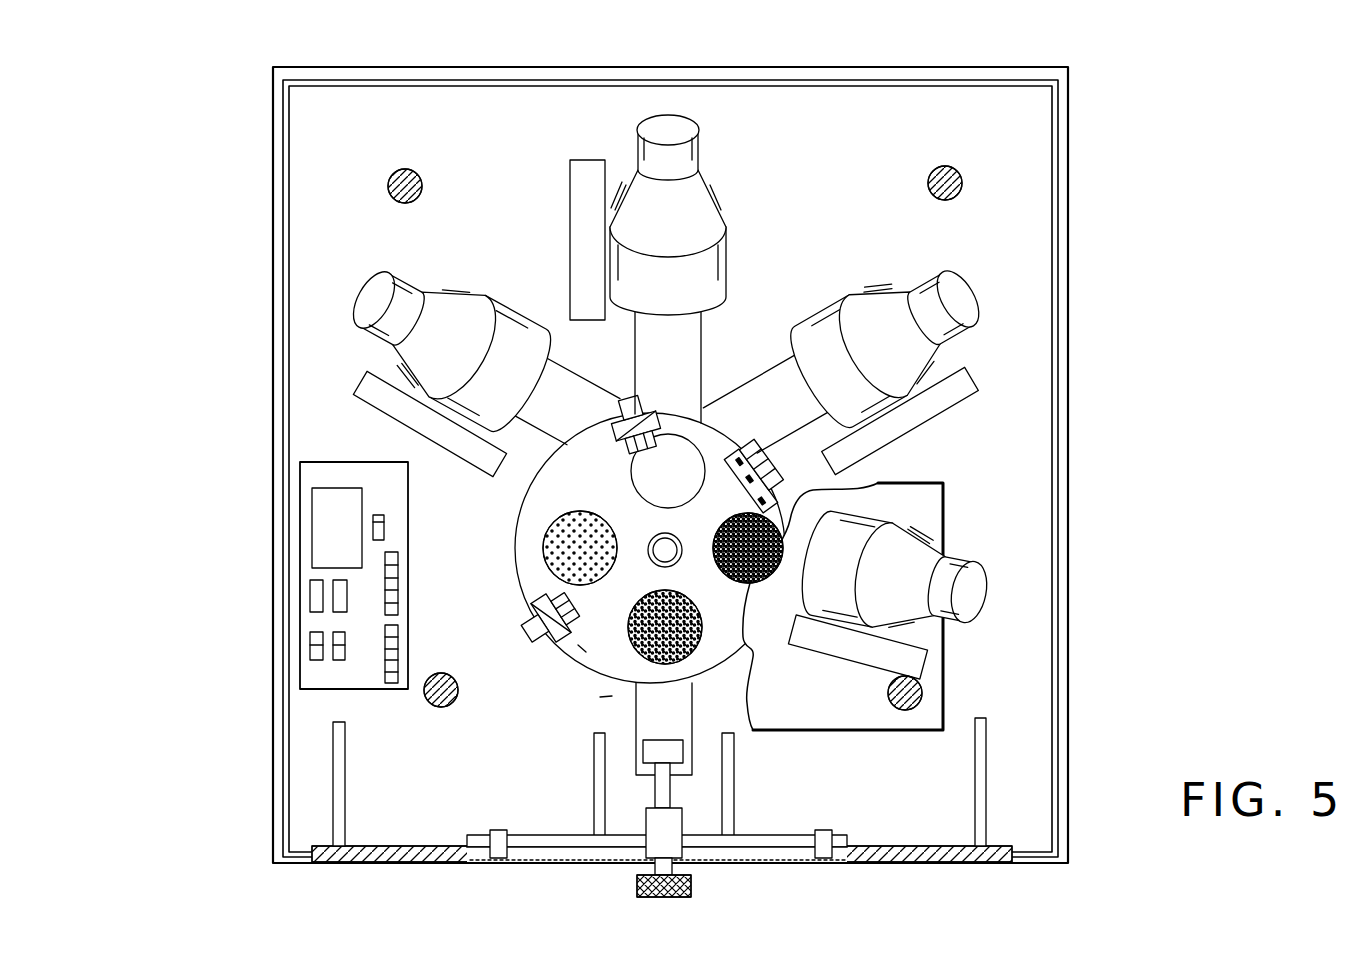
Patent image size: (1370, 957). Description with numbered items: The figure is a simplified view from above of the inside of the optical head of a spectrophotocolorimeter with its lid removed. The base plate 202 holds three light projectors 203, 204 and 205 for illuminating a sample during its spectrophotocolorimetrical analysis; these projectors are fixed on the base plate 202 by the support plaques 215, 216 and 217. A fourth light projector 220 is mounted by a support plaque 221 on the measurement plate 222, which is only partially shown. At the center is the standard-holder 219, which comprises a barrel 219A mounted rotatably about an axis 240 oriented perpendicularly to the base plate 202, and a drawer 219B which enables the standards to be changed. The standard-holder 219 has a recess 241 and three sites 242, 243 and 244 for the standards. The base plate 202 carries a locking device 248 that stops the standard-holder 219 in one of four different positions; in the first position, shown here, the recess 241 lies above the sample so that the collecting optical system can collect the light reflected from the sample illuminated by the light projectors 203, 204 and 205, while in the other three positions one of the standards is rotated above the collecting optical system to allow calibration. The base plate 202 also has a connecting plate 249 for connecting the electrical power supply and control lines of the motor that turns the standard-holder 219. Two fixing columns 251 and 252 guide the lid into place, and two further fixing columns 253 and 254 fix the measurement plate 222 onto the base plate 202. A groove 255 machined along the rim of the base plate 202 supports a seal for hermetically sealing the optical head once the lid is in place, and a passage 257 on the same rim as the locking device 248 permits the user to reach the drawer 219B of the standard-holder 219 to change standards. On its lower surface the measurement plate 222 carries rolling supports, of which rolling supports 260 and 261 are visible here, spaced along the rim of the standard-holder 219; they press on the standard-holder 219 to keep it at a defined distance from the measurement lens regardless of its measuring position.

The base plate 202 is at (1035, 200).
The light projector 203 is at (378, 293).
The light projector 204 is at (668, 128).
The light projector 205 is at (960, 305).
The support plaque 215 is at (372, 378).
The support plaque 216 is at (582, 193).
The support plaque 217 is at (962, 383).
The standard-holder 219 is at (477, 770).
The barrel 219A is at (582, 648).
The drawer 219B is at (605, 697).
The fourth light projector 220 is at (982, 580).
The support plaque 221 is at (900, 642).
The measurement plate 222 is at (862, 705).
The axis 240 is at (670, 552).
The recess 241 is at (673, 467).
The site 242 is at (557, 552).
The site 243 is at (668, 638).
The site 244 is at (783, 542).
The locking device 248 is at (695, 800).
The connecting plate 249 is at (322, 472).
The fixing column 251 is at (394, 178).
The fixing column 252 is at (933, 176).
The fixing column 253 is at (427, 710).
The fixing column 254 is at (922, 691).
The groove 255 is at (1060, 496).
The passage 257 is at (556, 862).
The rolling support 260 is at (533, 618).
The rolling support 261 is at (621, 401).